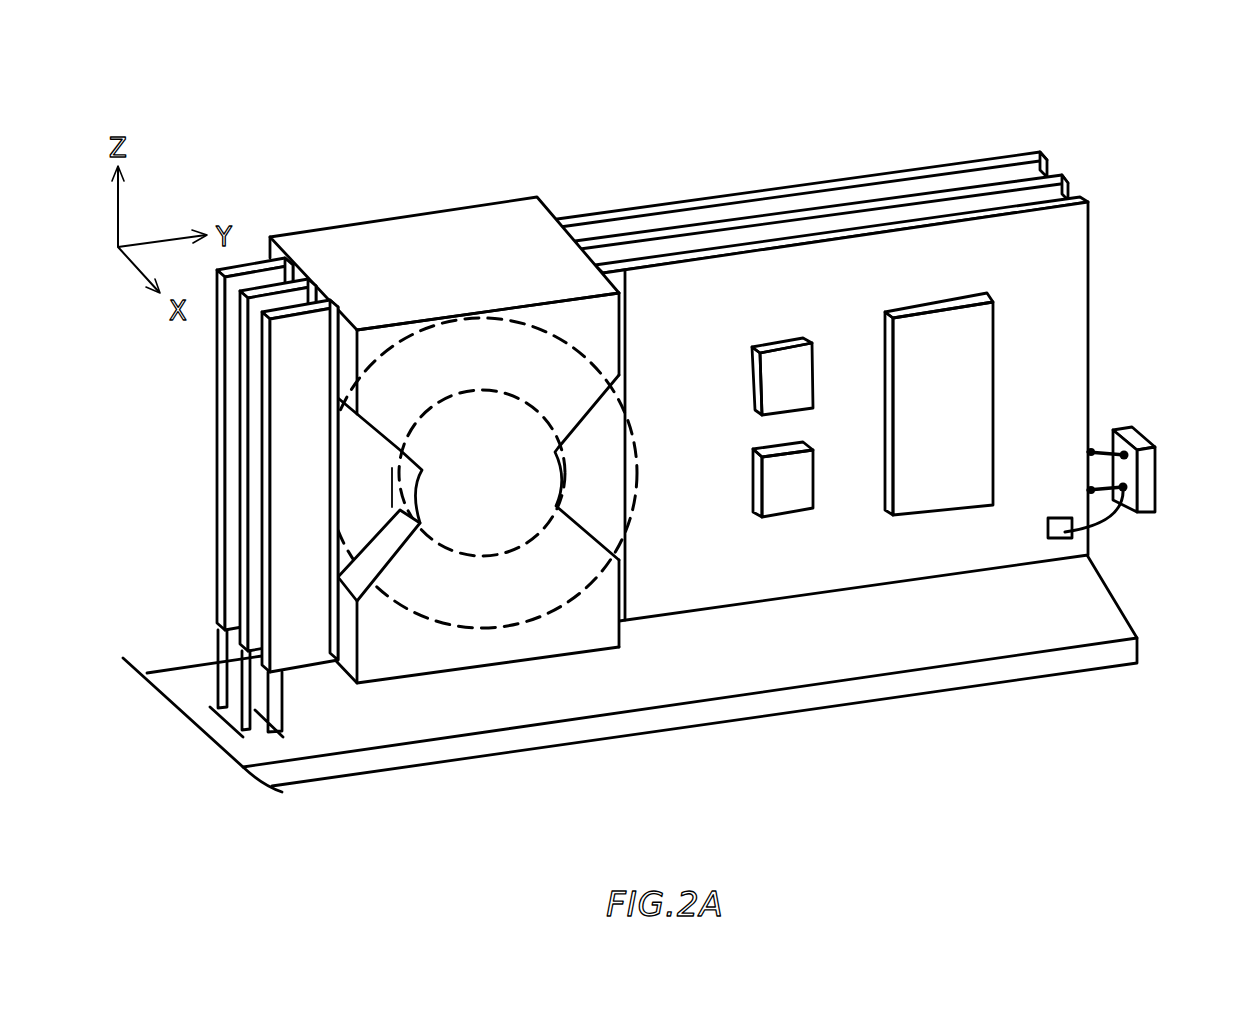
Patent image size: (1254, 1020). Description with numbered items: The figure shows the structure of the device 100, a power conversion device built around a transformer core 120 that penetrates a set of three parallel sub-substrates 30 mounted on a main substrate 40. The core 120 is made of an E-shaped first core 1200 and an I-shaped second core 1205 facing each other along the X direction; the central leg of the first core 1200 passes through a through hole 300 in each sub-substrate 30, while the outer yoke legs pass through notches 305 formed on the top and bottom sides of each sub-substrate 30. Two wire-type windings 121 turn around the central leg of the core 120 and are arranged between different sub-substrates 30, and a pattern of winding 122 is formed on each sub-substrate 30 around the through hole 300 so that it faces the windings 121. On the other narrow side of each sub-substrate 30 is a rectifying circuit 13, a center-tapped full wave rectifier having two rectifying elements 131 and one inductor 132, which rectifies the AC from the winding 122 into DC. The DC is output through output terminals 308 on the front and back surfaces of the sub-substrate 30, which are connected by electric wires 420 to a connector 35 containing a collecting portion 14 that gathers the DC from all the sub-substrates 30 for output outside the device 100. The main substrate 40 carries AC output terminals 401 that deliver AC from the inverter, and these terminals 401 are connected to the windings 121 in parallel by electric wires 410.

The device 100 is at (858, 80).
The core 120 is at (472, 92).
The first core 1200 is at (487, 222).
The second core 1205 is at (553, 292).
The winding 121 is at (541, 473).
The winding 122 is at (632, 487).
The through hole 300 is at (394, 476).
The notch 305 is at (331, 358).
The sub-substrate 30 is at (1067, 147).
The rectifying circuit 13 is at (747, 319).
The rectifying element 131 is at (752, 410).
The inductor 132 is at (883, 388).
The connector 35 is at (1157, 446).
The collecting portion 14 is at (1155, 435).
The electric wire 420 is at (1087, 575).
The output terminal 308 is at (1051, 545).
The main substrate 40 is at (676, 770).
The electric wire 410 is at (246, 556).
The AC output terminal 401 is at (283, 736).